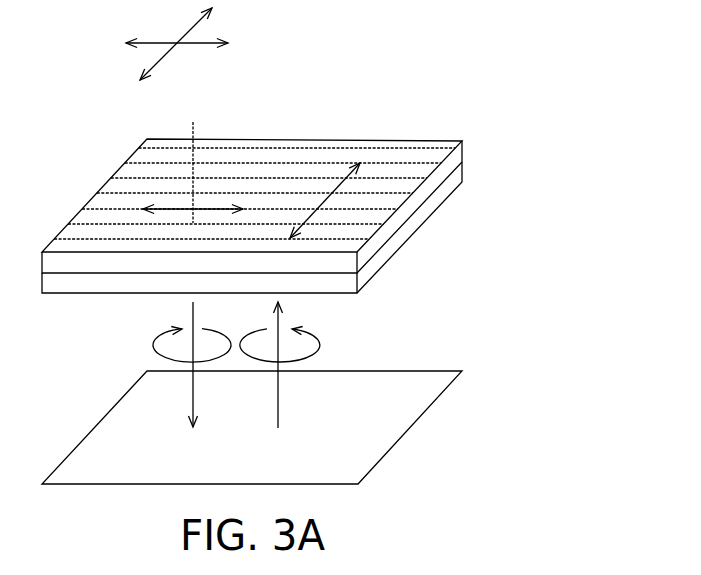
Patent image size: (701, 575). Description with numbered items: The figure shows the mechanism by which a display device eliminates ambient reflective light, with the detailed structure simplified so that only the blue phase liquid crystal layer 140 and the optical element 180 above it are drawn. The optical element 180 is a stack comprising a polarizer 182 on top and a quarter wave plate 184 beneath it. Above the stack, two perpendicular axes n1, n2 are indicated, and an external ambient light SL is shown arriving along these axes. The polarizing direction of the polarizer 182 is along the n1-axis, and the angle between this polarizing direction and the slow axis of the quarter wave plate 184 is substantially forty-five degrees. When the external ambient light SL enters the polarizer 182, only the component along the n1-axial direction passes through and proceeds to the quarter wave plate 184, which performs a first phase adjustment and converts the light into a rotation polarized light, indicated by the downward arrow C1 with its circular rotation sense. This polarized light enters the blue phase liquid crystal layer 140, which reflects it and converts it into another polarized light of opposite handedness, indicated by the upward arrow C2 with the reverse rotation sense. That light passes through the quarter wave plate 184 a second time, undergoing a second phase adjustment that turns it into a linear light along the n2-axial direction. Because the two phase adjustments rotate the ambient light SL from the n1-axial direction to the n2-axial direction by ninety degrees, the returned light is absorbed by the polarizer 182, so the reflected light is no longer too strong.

The optical element 180 is at (312, 210).
The polarizer 182 is at (462, 152).
The quarter wave plate 184 is at (462, 173).
The blue phase liquid crystal layer 140 is at (403, 383).
The n1-axis n1 is at (193, 44).
The n2-axis n2 is at (167, 60).
The external ambient light SL is at (192, 159).
The first circularly polarized light C1 is at (192, 384).
The second circularly polarized light C2 is at (280, 384).